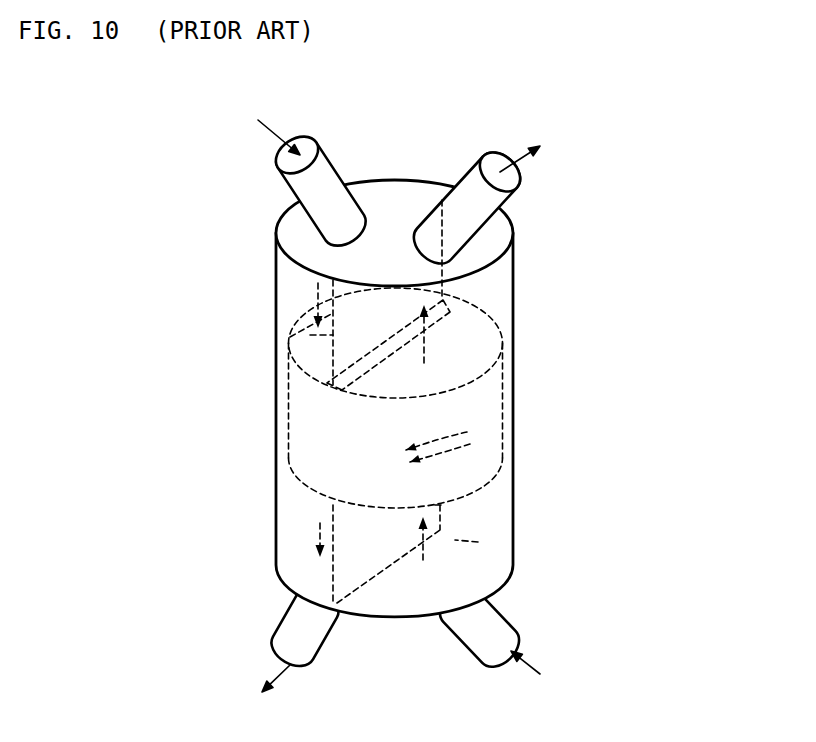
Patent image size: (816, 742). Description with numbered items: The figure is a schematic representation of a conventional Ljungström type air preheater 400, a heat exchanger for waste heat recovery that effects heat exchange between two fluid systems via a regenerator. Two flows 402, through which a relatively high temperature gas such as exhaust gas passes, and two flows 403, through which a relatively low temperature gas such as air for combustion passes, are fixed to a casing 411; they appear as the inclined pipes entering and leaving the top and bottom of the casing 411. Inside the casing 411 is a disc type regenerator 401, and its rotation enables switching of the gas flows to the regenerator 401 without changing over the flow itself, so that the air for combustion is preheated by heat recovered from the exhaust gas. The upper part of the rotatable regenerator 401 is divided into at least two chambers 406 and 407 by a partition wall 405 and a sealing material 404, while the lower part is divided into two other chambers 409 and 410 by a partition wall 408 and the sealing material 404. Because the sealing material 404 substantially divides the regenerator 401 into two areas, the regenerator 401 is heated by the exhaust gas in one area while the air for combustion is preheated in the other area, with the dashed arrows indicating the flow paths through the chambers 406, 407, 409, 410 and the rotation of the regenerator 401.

The Ljungström type air preheater 400 is at (454, 406).
The disc type regenerator 401 is at (515, 428).
The flows for relatively high temperature gas 402 is at (500, 620).
The flows for relatively low temperature gas 403 is at (296, 614).
The sealing material 404 is at (447, 307).
The partition wall 405 is at (296, 324).
The chamber 406 is at (300, 283).
The chamber 407 is at (512, 334).
The partition wall 408 is at (377, 575).
The chamber 409 is at (298, 518).
The chamber 410 is at (538, 553).
The casing 411 is at (514, 505).